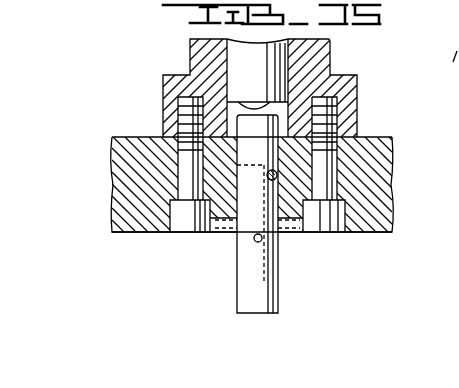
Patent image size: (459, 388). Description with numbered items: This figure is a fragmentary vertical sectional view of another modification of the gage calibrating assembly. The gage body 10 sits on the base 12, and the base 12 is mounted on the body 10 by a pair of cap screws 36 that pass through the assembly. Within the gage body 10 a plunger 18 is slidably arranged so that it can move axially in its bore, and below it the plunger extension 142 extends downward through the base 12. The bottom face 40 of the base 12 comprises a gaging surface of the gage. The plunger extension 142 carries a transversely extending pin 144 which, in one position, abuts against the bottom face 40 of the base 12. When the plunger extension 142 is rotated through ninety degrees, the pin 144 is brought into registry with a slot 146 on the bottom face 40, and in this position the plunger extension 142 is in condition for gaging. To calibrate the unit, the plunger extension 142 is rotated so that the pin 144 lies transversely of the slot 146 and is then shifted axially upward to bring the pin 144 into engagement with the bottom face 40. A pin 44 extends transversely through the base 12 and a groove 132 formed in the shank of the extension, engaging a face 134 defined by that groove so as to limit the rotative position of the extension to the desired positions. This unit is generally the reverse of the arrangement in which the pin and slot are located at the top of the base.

The gage body 10 is at (320, 67).
The base 12 is at (380, 217).
The plunger 18 is at (257, 72).
The cap screws 36 is at (185, 132).
The bottom face 40 is at (377, 233).
The pin 44 is at (268, 171).
The groove 132 is at (282, 233).
The face 134 is at (236, 215).
The plunger extension 142 is at (250, 300).
The pin 144 is at (255, 241).
The slot 146 is at (300, 234).